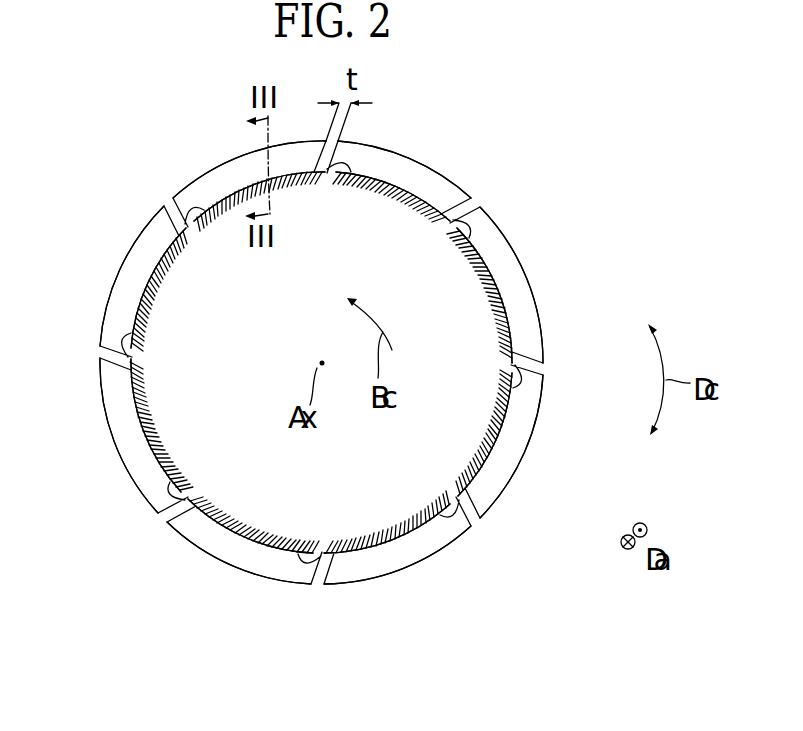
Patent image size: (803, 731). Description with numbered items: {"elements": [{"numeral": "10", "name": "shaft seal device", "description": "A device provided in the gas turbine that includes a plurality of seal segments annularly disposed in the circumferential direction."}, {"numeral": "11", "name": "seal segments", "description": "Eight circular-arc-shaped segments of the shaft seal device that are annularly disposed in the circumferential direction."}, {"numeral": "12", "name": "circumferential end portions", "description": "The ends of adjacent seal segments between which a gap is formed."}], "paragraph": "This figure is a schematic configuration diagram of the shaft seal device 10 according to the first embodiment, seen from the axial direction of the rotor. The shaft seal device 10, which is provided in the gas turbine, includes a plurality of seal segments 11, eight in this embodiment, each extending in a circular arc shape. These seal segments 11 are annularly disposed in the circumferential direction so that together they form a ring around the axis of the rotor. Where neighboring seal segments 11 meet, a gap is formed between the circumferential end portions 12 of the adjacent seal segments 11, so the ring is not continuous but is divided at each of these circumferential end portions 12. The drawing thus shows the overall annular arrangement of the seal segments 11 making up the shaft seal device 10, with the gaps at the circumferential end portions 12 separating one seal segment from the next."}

The bearing pad ring / brush seal ring 10 is at (574, 147).
The arc-shaped segment 11 is at (238, 154).
The inner peripheral serration / teeth 12 is at (449, 500).